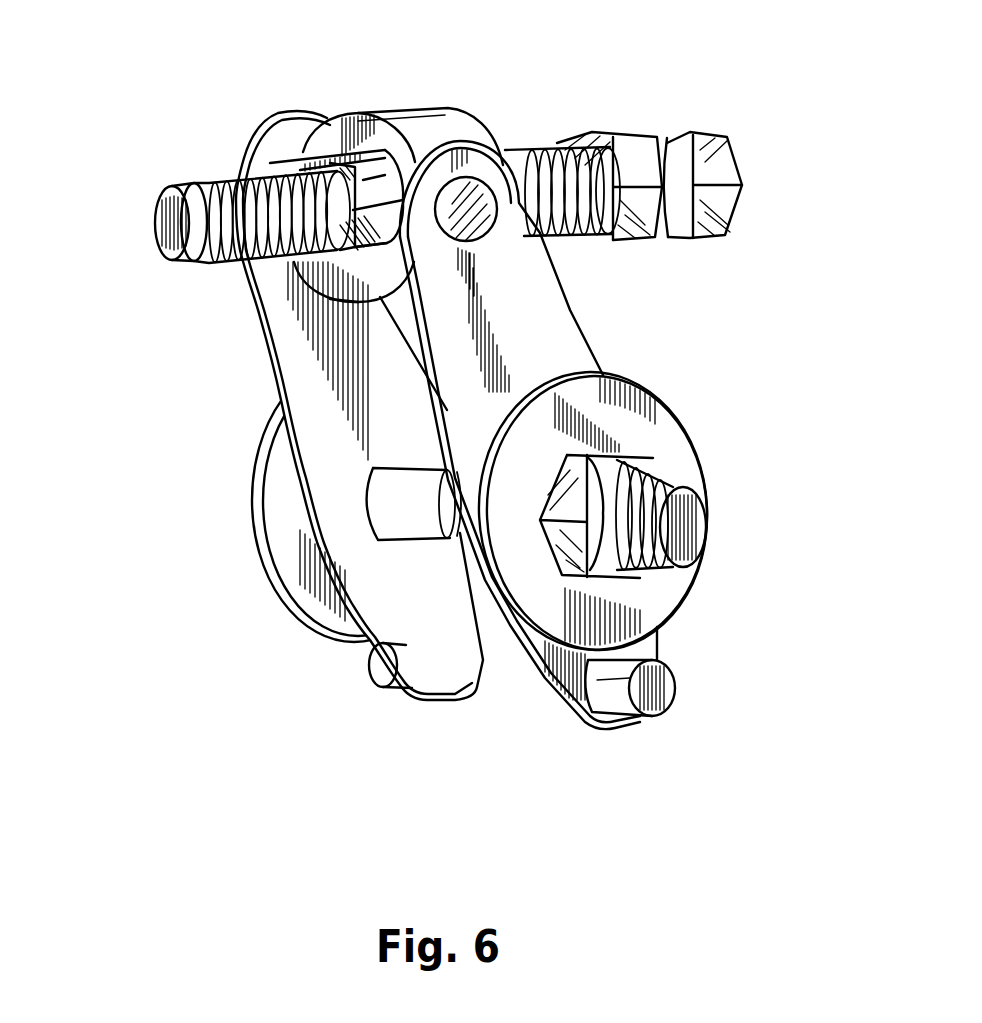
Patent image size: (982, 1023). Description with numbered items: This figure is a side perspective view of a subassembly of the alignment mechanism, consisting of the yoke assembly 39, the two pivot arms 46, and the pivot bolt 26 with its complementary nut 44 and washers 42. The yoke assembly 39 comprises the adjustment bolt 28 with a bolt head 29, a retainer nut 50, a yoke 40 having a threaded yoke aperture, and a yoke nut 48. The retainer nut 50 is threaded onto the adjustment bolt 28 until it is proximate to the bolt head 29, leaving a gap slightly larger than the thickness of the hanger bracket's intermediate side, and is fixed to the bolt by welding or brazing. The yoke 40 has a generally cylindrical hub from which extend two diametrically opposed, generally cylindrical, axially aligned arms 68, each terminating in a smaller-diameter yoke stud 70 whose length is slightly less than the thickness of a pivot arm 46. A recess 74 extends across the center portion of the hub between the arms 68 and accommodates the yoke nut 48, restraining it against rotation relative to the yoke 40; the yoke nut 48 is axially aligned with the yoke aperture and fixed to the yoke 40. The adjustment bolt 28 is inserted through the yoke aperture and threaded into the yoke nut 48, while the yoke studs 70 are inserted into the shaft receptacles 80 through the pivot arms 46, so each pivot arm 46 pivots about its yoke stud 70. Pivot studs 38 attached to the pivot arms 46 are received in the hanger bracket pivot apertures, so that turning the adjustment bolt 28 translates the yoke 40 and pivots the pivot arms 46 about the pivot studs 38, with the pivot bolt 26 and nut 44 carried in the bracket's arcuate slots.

The pivot bolt 26 is at (690, 522).
The adjustment bolt 28 is at (170, 227).
The bolt head 29 is at (718, 157).
The pivot stud 38 is at (657, 690).
The yoke assembly 39 is at (510, 97).
The yoke 40 is at (367, 108).
The washer 42 is at (667, 417).
The nut 44 is at (663, 463).
The pivot arm 46 is at (510, 343).
The yoke nut 48 is at (350, 165).
The retainer nut 50 is at (660, 145).
The arm 68 is at (295, 249).
The yoke stud 70 is at (470, 210).
The recess 74 is at (350, 303).
The shaft receptacle 80 is at (362, 292).